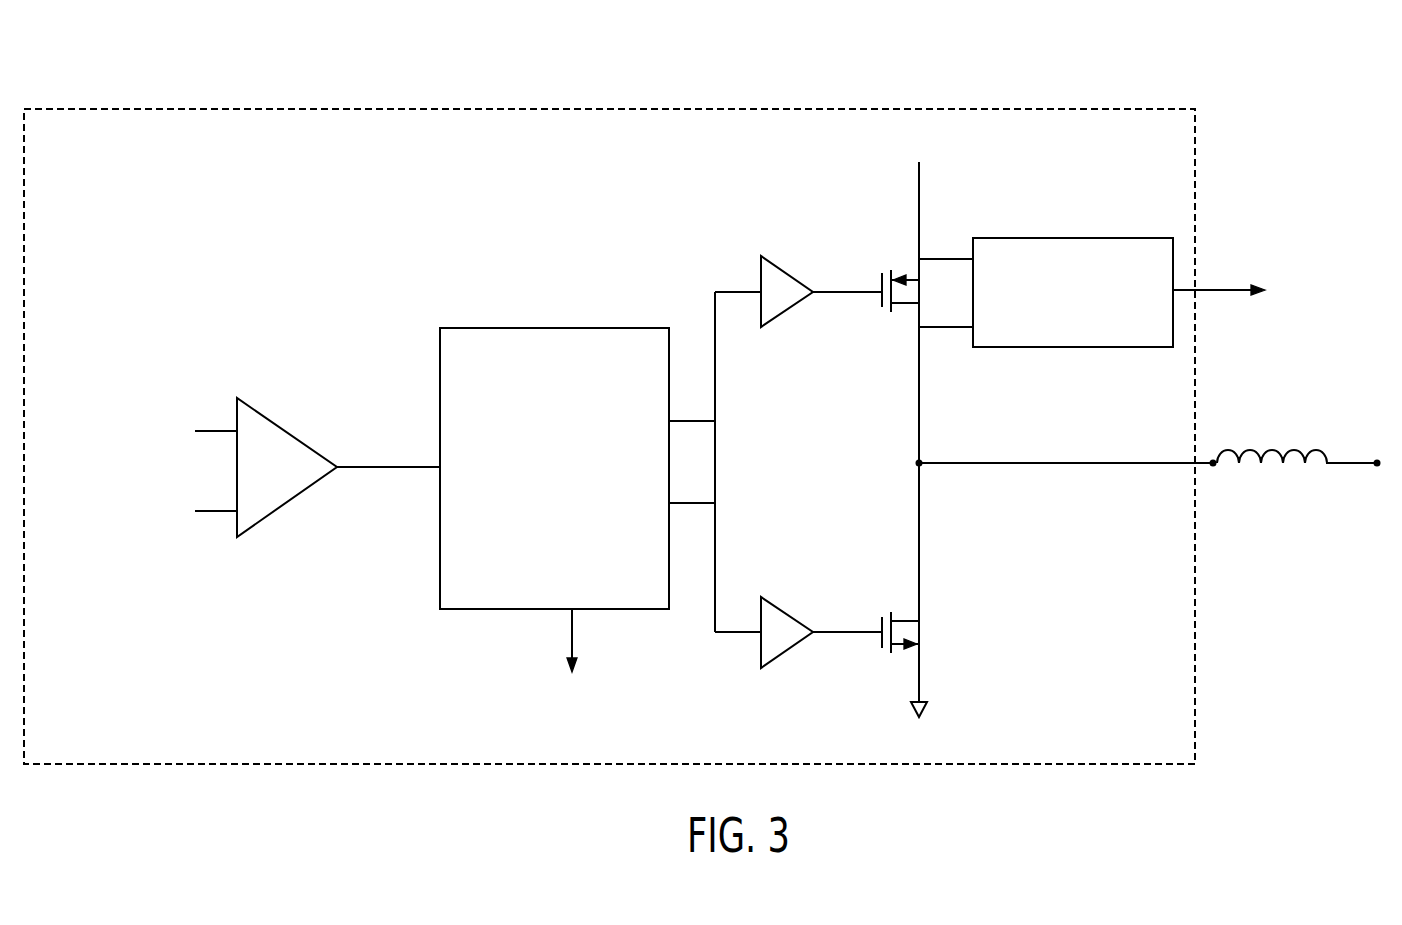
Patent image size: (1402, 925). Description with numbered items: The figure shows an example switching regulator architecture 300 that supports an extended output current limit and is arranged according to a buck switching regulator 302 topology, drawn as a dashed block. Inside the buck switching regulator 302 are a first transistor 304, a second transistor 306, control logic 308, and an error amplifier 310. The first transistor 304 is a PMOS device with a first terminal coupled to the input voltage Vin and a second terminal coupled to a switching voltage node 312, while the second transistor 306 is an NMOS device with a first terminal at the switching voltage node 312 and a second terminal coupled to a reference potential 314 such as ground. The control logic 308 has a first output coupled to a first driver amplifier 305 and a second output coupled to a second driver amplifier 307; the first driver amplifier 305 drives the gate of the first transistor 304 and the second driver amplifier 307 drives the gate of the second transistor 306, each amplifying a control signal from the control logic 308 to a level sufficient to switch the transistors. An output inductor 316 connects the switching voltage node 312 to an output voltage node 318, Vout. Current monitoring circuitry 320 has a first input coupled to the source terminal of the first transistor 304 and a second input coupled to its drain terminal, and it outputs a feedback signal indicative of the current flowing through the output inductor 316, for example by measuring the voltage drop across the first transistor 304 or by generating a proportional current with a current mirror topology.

The switching regulator architecture 300 is at (1258, 91).
The buck switching regulator 302 is at (1100, 108).
The first transistor 304 is at (882, 287).
The first driver amplifier 305 is at (761, 279).
The second transistor 306 is at (882, 645).
The second driver amplifier 307 is at (761, 655).
The control logic 308 is at (440, 360).
The error amplifier 310 is at (297, 432).
The switching voltage node 312 is at (921, 461).
The reference potential 314 is at (925, 702).
The output inductor 316 is at (1225, 457).
The output voltage node 318 is at (1375, 460).
The current monitoring circuitry 320 is at (1097, 238).